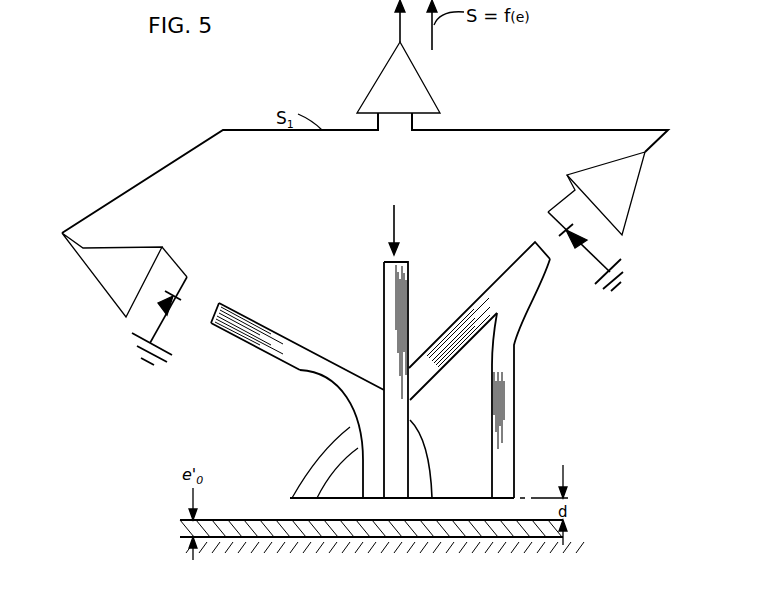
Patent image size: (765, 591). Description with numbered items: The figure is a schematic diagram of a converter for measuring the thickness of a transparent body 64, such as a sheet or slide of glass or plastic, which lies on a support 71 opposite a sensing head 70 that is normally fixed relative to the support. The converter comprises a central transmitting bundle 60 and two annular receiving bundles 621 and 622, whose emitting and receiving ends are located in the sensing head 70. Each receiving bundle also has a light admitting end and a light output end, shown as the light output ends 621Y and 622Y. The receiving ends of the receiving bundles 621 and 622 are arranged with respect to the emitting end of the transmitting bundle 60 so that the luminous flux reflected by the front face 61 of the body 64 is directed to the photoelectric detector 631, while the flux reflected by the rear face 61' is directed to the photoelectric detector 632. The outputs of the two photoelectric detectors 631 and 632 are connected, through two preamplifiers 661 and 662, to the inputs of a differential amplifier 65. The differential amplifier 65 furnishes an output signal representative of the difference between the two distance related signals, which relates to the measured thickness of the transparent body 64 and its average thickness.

The central transmitting bundle 60 is at (395, 295).
The front face 61 is at (411, 498).
The rear face 61' is at (461, 507).
The annular receiving bundle 621 is at (373, 471).
The annular receiving bundle 622 is at (343, 442).
The light output end 621Y is at (215, 303).
The light output end 622Y is at (548, 255).
The photoelectric detector 631 is at (172, 328).
The photoelectric detector 632 is at (582, 255).
The transparent body 64 is at (227, 528).
The differential amplifier 65 is at (416, 85).
The preamplifier 661 is at (112, 270).
The preamplifier 662 is at (627, 173).
The sensing head 70 is at (335, 495).
The support 71 is at (537, 545).